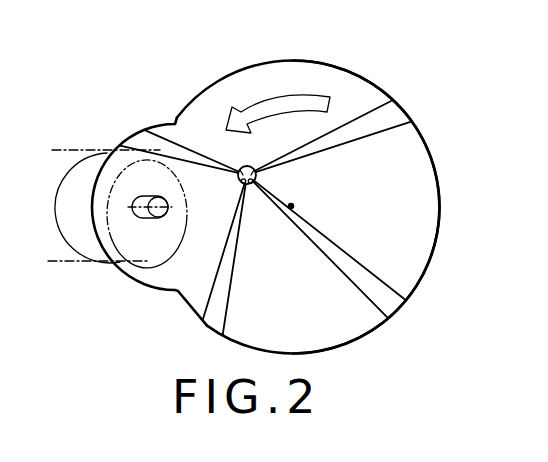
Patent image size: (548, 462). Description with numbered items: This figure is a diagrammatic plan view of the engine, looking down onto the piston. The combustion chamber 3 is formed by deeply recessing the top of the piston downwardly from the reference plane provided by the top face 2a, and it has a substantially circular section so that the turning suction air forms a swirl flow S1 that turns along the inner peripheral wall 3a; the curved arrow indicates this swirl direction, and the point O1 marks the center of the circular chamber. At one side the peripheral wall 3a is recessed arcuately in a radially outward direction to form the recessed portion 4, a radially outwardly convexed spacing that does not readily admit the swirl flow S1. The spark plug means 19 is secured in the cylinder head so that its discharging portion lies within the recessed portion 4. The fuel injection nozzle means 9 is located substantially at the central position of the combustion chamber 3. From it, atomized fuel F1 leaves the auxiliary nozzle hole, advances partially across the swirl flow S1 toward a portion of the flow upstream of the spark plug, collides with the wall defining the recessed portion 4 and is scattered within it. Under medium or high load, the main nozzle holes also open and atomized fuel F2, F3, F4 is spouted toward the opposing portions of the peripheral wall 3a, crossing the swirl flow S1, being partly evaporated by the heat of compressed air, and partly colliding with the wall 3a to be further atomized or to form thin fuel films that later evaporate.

The top face 2a is at (330, 61).
The combustion chamber 3 is at (288, 209).
The inner peripheral wall 3a is at (437, 212).
The recessed portion 4 is at (150, 271).
The fuel injection nozzle means 9 is at (256, 196).
The spark plug means 19 is at (83, 228).
The center of rotation O1 is at (290, 189).
The swirl flow S1 is at (260, 98).
The atomized fuel F1 is at (165, 140).
The atomized fuel F2 is at (394, 118).
The atomized fuel F3 is at (388, 302).
The atomized fuel F4 is at (202, 266).